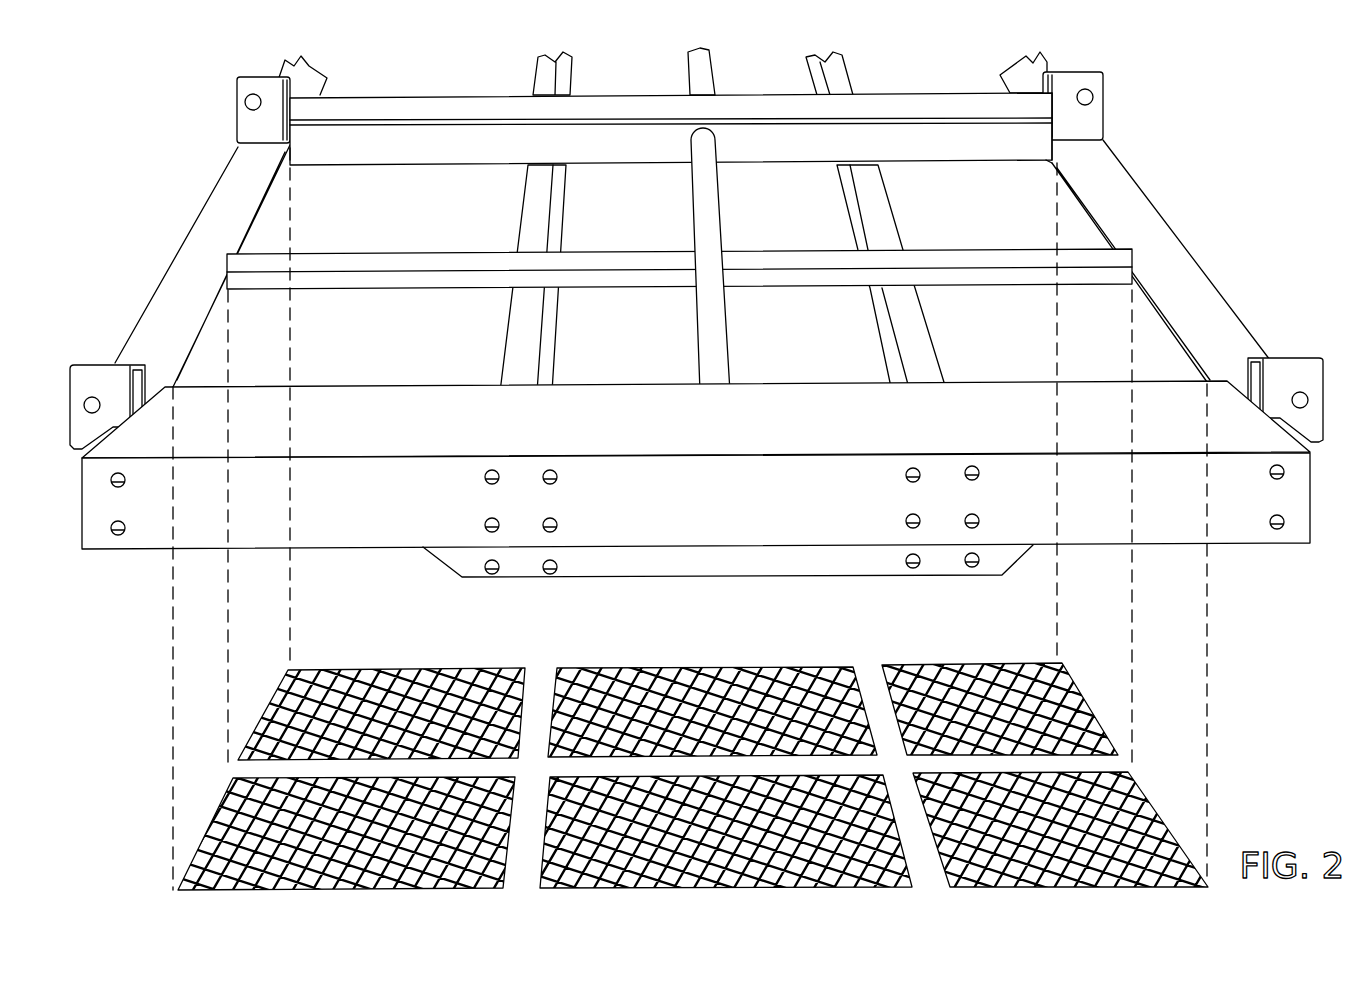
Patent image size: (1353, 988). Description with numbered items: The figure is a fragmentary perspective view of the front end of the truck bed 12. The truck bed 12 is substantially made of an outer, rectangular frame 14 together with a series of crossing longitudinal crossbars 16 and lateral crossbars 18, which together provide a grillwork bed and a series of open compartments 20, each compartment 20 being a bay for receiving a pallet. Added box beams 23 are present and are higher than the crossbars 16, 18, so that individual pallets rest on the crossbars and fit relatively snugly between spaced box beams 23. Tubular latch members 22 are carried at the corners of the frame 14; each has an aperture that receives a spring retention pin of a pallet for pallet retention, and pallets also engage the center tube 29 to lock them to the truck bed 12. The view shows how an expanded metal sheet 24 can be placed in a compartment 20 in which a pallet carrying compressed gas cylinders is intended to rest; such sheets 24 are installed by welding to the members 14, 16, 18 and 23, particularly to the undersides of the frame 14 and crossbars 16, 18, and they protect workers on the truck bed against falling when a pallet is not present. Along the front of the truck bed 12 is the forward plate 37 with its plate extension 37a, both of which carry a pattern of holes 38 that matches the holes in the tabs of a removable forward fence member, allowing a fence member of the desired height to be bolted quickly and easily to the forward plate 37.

The truck bed 12 is at (702, 496).
The outer rectangular frame 14 is at (192, 263).
The longitudinal crossbar 16 is at (930, 357).
The lateral crossbar 18 is at (815, 258).
The compartment 20 is at (1040, 193).
The tubular latch member 22 is at (248, 126).
The box beam 23 is at (458, 110).
The expanded metal sheet 24 is at (415, 697).
The center tube 29 is at (698, 223).
The forward plate 37 is at (373, 513).
The plate extension 37a is at (762, 567).
The hole 38 is at (117, 535).